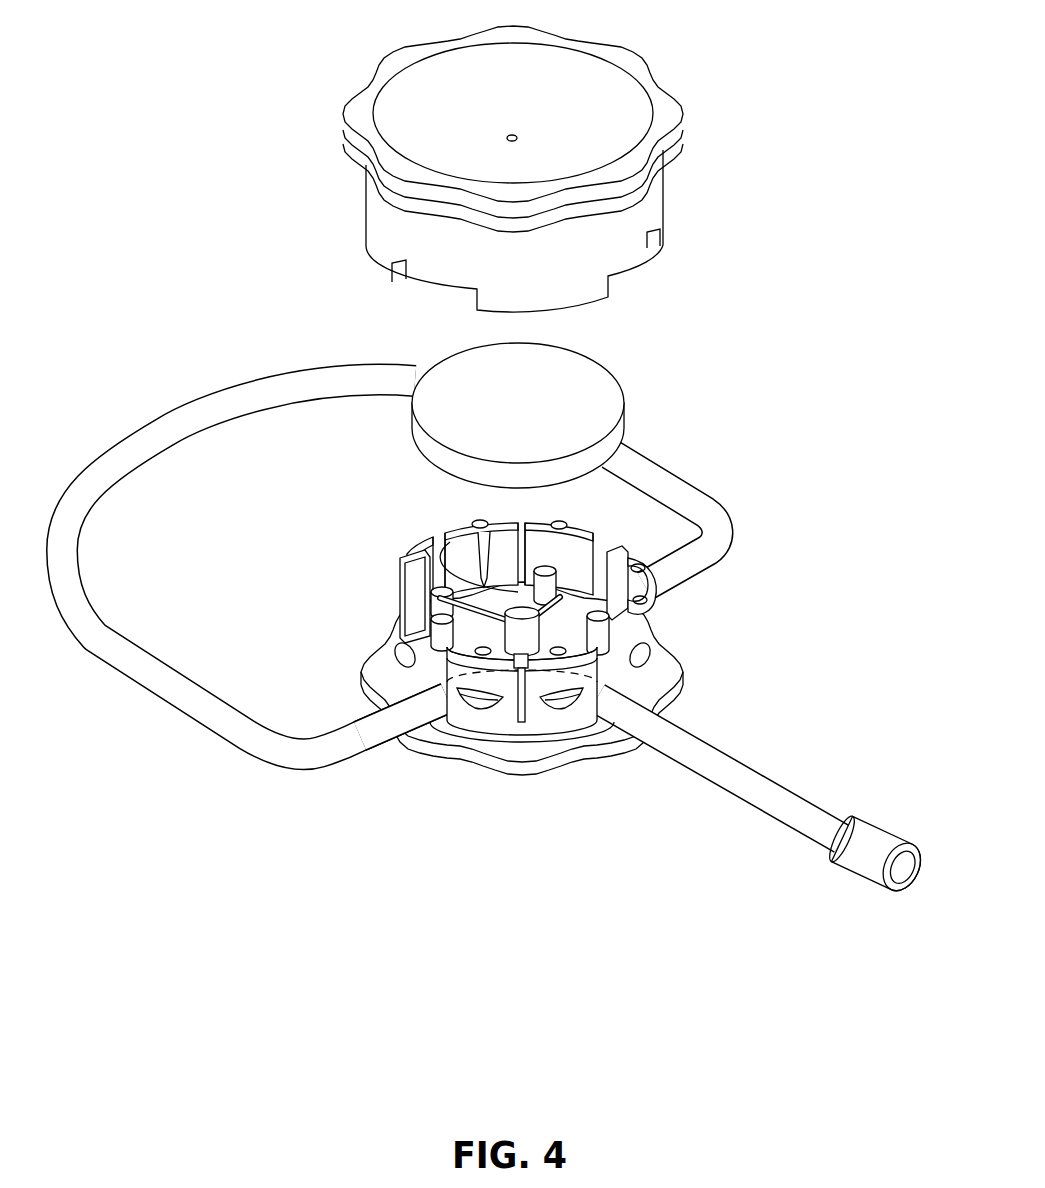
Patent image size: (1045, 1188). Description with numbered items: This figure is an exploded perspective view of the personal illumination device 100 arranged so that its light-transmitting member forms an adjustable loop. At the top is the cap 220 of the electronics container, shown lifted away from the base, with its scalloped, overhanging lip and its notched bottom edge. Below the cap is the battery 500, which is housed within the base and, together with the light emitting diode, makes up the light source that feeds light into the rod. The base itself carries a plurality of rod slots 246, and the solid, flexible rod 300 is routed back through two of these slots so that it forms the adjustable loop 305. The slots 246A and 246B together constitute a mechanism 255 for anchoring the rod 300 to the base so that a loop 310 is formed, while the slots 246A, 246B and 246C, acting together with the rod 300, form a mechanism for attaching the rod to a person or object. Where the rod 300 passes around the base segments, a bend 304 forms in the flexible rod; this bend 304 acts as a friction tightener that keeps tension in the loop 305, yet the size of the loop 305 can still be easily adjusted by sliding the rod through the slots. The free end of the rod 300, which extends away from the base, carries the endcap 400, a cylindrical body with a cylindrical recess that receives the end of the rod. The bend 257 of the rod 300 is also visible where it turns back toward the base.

The personal illumination device 100 is at (492, 494).
The cap 220 is at (547, 166).
The battery 500 is at (584, 415).
The flexible rod 300 is at (449, 600).
The adjustable loop 305 is at (185, 478).
The loop 310 is at (252, 556).
The mechanism for anchoring rod 255 is at (338, 770).
The tube bend 257 is at (755, 555).
The rod slots 246 is at (538, 618).
The rod slot 246A is at (427, 746).
The rod slot 246B is at (583, 756).
The rod slot 246C is at (645, 565).
The bend 304 is at (475, 747).
The endcap 400 is at (845, 890).